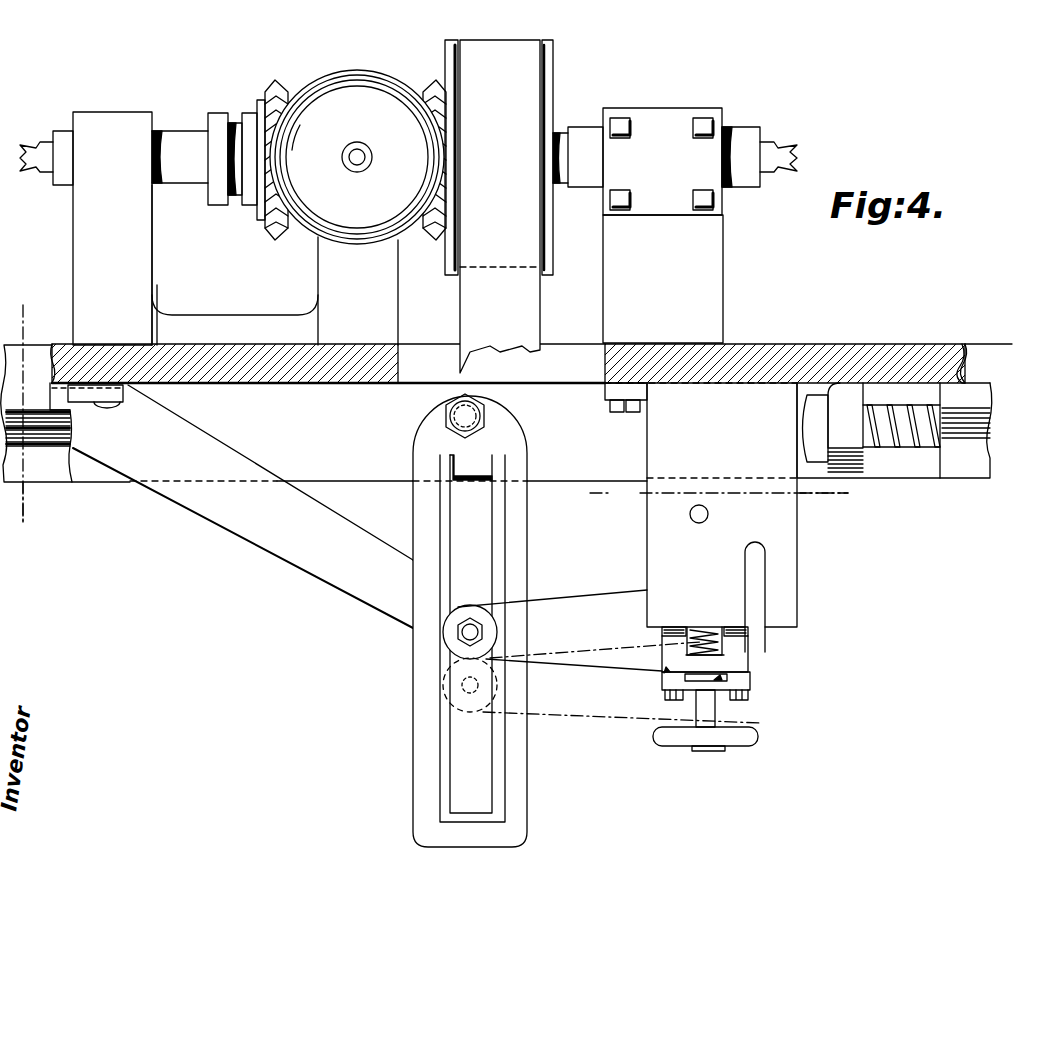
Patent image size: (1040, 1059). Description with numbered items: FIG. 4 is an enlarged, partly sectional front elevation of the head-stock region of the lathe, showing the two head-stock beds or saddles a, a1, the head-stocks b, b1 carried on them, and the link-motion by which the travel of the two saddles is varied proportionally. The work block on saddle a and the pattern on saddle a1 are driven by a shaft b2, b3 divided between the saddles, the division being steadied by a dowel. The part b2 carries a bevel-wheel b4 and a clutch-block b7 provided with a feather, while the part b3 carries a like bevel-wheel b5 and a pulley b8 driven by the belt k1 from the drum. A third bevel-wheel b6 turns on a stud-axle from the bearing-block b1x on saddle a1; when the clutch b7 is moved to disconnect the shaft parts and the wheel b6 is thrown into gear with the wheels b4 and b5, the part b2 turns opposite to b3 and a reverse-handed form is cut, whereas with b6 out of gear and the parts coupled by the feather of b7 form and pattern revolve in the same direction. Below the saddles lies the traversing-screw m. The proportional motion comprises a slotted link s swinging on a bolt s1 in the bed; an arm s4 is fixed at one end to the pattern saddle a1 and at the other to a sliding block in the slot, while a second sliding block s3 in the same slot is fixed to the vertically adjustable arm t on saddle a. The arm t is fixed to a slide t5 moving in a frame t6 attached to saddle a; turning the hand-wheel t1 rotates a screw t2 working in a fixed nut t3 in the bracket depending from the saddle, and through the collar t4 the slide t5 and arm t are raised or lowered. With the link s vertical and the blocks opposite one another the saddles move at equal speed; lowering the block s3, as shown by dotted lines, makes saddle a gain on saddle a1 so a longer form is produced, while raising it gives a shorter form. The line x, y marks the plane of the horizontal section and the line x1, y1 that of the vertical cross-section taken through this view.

The head-stock bed or saddle a is at (752, 352).
The pattern bed or saddle a1 is at (280, 344).
The section line mark x' x1 is at (21, 404).
The section line mark y' y1 is at (36, 508).
The section line mark x is at (719, 493).
The section line mark y is at (832, 493).
The head-stock b is at (700, 225).
The head-stock b1 is at (88, 228).
The bearing-block b1x is at (275, 291).
The shaft part b2 is at (178, 126).
The shaft part b3 is at (585, 148).
The bevel-wheel b4 is at (290, 92).
The bevel-wheel b5 is at (436, 88).
The bevel-wheel b6 is at (357, 157).
The clutch-block b7 is at (218, 122).
The pulley b8 is at (553, 96).
The belt k1 is at (499, 206).
The slotted link s is at (470, 621).
The bolt s1 is at (474, 423).
The sliding block s3 is at (480, 602).
The arm s4 is at (264, 517).
The vertically-adjustable arm t is at (609, 656).
The hand-wheel t1 is at (705, 749).
The screw t2 is at (717, 708).
The fixed nut t3 is at (708, 516).
The collar t4 is at (722, 678).
The slide t5 is at (664, 676).
The frame t6 is at (701, 517).
The traversing-screw m is at (897, 430).